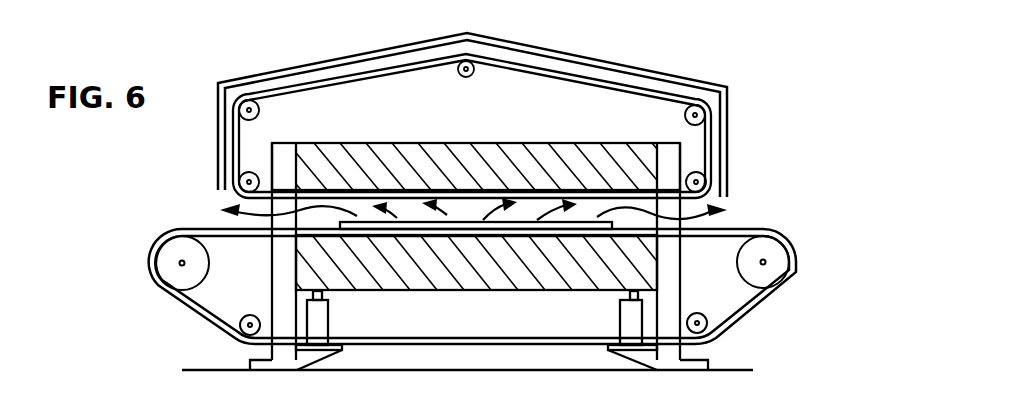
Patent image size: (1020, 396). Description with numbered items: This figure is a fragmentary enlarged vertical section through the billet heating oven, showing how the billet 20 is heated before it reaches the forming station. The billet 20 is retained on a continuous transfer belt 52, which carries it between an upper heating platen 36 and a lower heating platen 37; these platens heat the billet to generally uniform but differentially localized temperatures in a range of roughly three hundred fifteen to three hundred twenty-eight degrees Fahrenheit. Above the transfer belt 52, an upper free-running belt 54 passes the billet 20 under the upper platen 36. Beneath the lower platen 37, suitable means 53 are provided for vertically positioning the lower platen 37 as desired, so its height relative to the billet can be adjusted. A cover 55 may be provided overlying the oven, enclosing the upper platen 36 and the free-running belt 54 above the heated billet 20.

The billet 20 is at (503, 228).
The upper heating platen 36 is at (557, 153).
The lower heating platen 37 is at (416, 283).
The continuous transfer belt 52 is at (740, 232).
The means for vertically positioning the lower platen 53 is at (328, 320).
The upper free-running belt 54 is at (618, 82).
The cover 55 is at (362, 56).